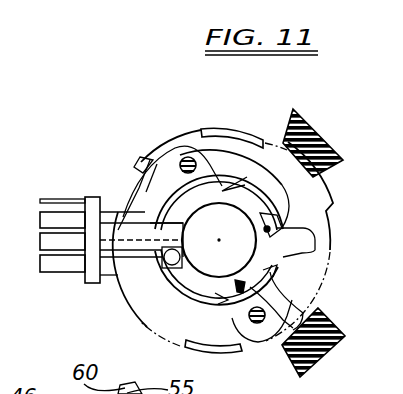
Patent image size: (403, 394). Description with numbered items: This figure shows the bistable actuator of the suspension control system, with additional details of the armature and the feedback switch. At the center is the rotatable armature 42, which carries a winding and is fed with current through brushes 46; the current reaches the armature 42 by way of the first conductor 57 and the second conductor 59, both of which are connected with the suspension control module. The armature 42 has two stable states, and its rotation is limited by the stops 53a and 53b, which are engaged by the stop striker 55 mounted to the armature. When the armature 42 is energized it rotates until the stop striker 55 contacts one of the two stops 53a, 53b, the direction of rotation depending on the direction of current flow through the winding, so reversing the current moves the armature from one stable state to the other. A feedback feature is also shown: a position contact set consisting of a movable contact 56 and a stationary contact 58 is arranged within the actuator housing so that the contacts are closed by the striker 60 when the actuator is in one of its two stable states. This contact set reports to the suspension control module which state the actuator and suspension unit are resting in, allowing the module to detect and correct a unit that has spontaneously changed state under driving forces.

The armature 42 is at (172, 180).
The brushes 46 is at (188, 157).
The stop 53a is at (322, 140).
The stop 53b is at (298, 372).
The stop striker 55 is at (337, 192).
The movable contact 56 is at (152, 312).
The first conductor 57 is at (148, 168).
The stationary contact 58 is at (135, 215).
The second conductor 59 is at (122, 298).
The striker 60 is at (252, 283).